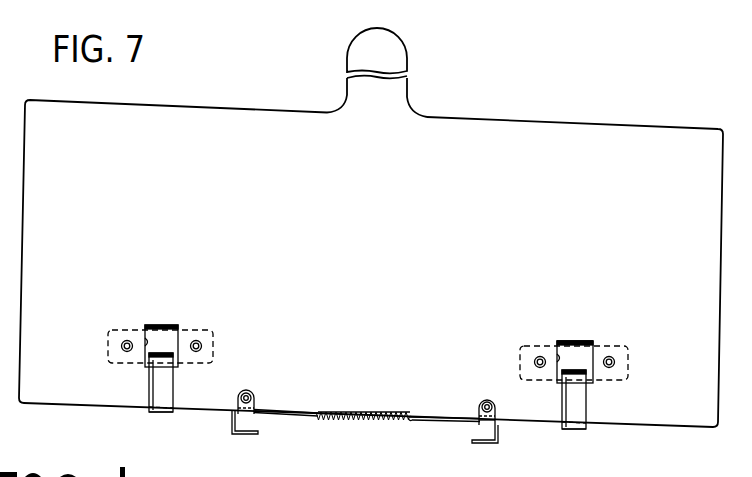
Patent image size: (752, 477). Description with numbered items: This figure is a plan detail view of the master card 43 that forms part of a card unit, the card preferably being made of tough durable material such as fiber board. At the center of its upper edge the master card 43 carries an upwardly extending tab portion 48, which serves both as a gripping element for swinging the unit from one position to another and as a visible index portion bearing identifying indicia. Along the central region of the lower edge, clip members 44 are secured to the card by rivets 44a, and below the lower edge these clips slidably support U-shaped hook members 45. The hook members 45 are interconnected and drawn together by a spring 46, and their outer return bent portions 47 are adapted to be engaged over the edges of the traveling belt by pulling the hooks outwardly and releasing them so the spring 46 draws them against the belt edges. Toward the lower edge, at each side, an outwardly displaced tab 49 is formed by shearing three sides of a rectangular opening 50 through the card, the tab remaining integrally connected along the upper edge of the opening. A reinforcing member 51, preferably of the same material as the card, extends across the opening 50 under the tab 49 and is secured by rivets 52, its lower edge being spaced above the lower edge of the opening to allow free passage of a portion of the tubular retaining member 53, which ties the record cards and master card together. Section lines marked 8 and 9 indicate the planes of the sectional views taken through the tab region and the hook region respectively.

The master card 43 is at (640, 413).
The clip member 44 is at (255, 399).
The rivet 44a is at (487, 400).
The U-shaped hook member 45 is at (290, 414).
The spring 46 is at (358, 420).
The outer return bent portion 47 is at (240, 437).
The tab portion 48 is at (357, 100).
The outwardly displaced tab 49 is at (576, 342).
The rectangular opening 50 is at (148, 341).
The reinforcing member 51 is at (198, 332).
The rivet 52 is at (202, 347).
The tubular retaining member 53 is at (138, 414).
The section line 8- 8 is at (222, 287).
The section line 9- 9 is at (305, 365).